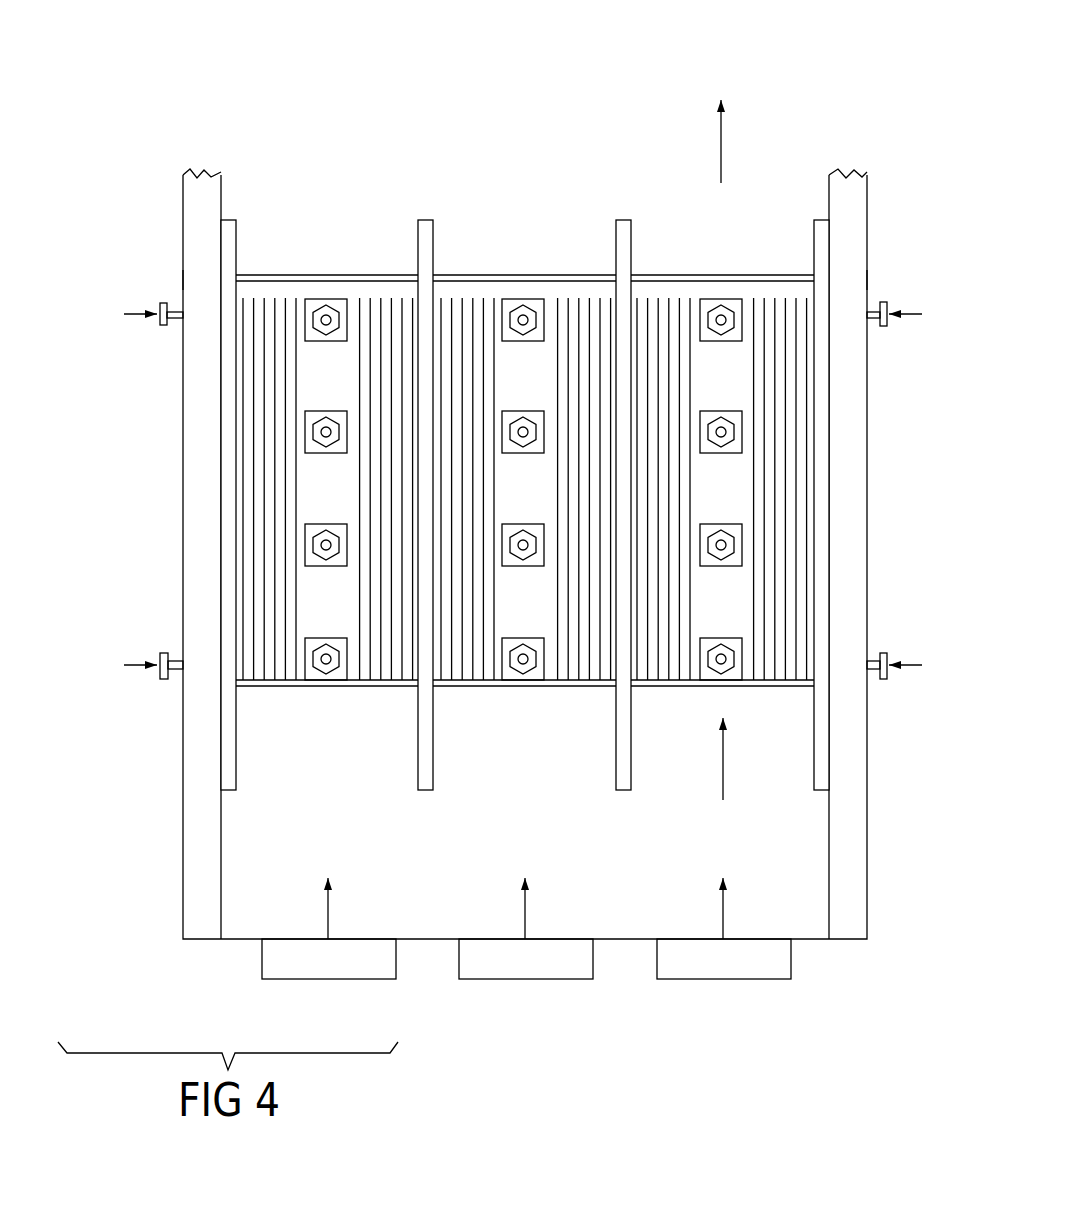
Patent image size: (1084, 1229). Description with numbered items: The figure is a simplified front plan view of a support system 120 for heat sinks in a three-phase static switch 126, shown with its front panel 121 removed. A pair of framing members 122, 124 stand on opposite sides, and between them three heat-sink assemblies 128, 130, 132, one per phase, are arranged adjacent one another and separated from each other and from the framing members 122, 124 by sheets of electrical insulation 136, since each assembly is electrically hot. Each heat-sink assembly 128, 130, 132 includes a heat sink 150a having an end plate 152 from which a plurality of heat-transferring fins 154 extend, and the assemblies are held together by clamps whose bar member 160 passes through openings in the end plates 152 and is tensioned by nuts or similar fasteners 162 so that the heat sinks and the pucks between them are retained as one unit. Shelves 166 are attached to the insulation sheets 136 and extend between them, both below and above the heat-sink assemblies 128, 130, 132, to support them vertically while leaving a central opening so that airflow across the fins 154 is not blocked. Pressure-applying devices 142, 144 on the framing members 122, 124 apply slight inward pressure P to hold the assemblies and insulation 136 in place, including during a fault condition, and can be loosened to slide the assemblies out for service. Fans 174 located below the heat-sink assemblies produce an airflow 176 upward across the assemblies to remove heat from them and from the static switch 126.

The support system 120 is at (513, 93).
The front panel 121 is at (70, 430).
The framing member 122 is at (200, 270).
The framing member 124 is at (848, 225).
The three-phase static switch 126 is at (640, 113).
The heat-sink assembly 128 is at (334, 198).
The heat-sink assembly 130 is at (520, 200).
The heat-sink assembly 132 is at (744, 197).
The sheets of electrical insulation 136 is at (236, 771).
The pressure-applying device 142 is at (165, 327).
The pressure-applying device 144 is at (164, 681).
The heat sink 150a is at (390, 230).
The end plate 152 is at (345, 498).
The heat-transferring fins 154 is at (244, 533).
The bar member 160 is at (322, 432).
The fasteners 162 is at (320, 328).
The shelves 166 is at (268, 278).
The fans 174 is at (287, 966).
The airflow 176 is at (330, 915).